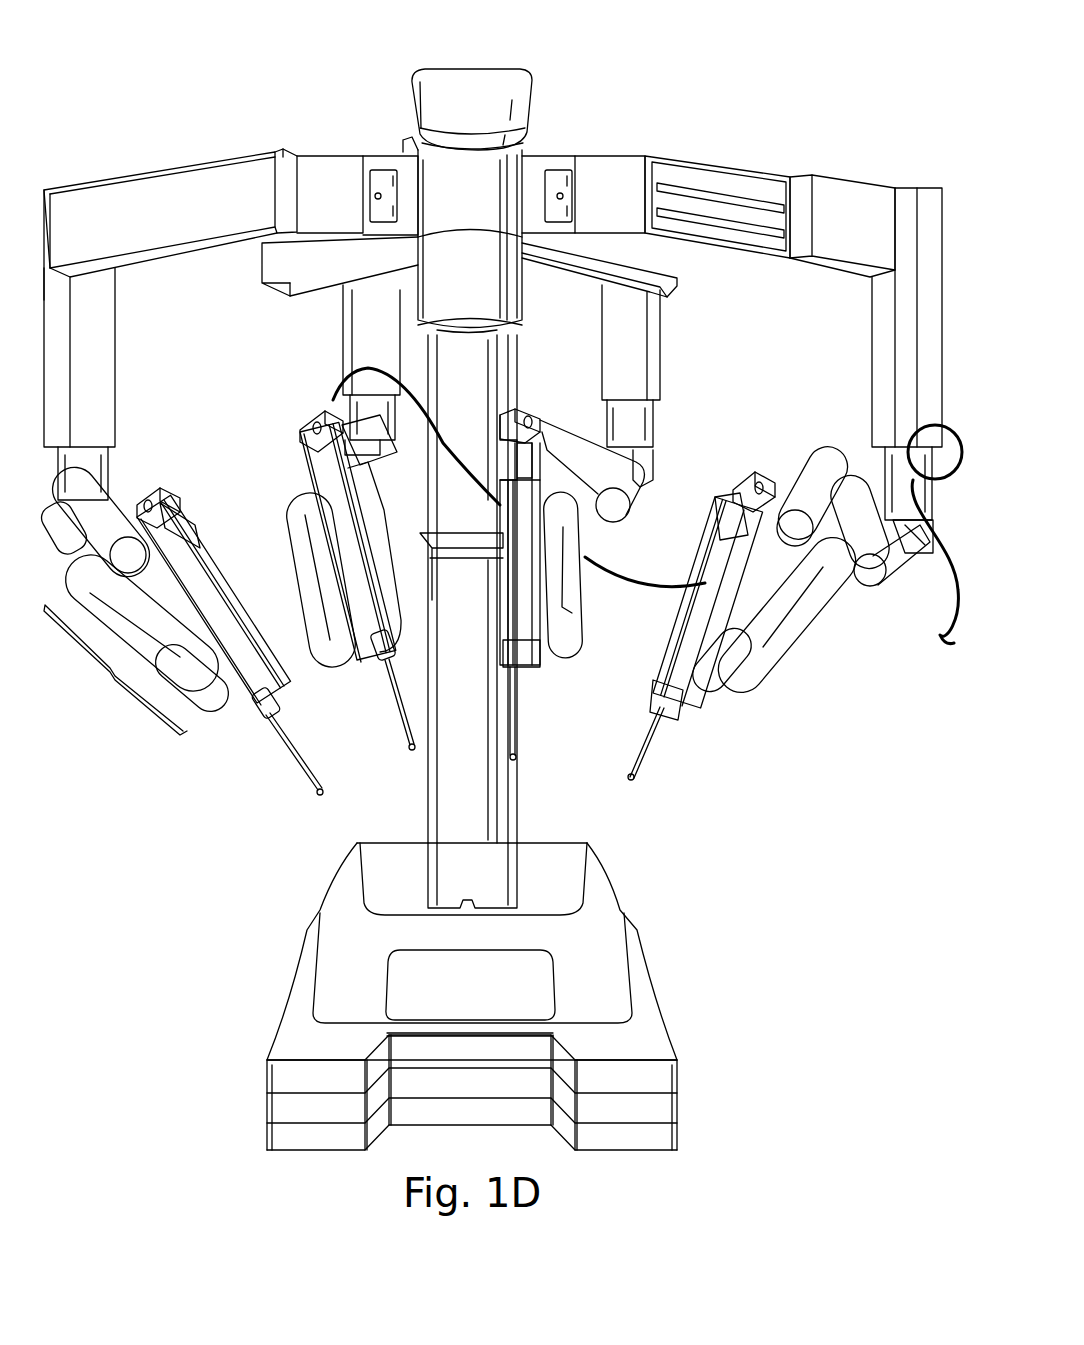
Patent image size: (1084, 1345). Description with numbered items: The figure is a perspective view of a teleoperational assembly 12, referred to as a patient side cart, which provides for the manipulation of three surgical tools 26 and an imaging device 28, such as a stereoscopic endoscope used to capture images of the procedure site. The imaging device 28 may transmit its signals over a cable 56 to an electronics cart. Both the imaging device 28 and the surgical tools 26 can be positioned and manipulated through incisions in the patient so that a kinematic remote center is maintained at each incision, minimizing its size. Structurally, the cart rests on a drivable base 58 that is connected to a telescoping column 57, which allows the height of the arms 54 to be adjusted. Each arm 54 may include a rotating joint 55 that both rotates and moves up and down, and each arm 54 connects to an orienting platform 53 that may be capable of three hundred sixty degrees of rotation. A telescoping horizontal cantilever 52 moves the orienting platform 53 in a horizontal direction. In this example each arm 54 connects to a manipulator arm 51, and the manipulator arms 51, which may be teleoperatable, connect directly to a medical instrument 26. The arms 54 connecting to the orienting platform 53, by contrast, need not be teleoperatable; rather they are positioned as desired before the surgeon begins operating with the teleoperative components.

The teleoperational assembly 12 is at (247, 62).
The surgical tool 26 is at (227, 600).
The imaging device 28 is at (318, 420).
The manipulator arm 51 is at (115, 670).
The telescoping horizontal cantilever 52 is at (487, 68).
The orienting platform 53 is at (457, 178).
The arm 54 is at (913, 170).
The rotating joint 55 is at (883, 465).
The cable 56 is at (948, 598).
The telescoping column 57 is at (513, 796).
The drivable base 58 is at (658, 1037).